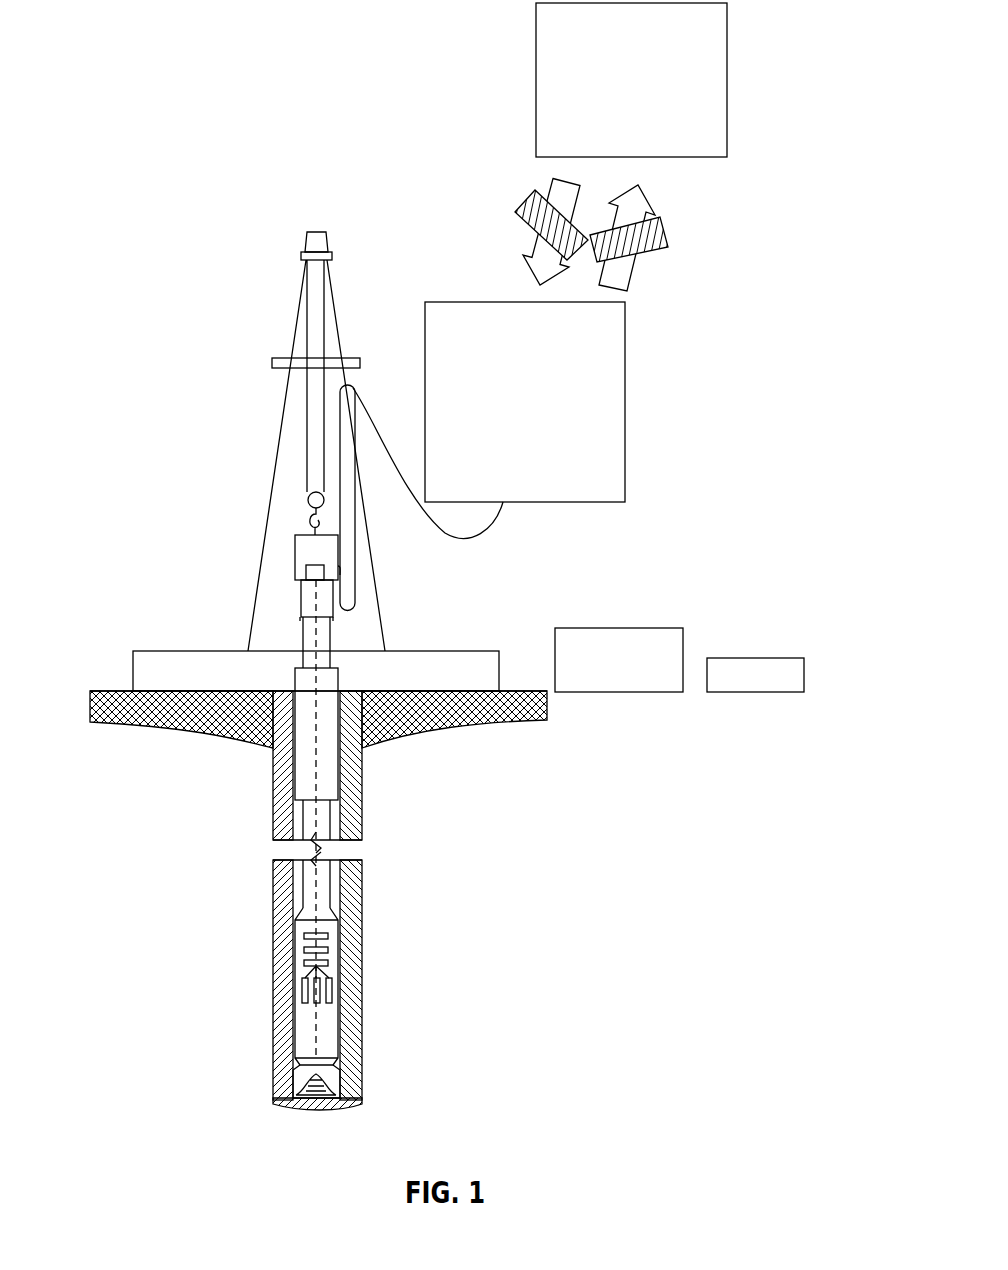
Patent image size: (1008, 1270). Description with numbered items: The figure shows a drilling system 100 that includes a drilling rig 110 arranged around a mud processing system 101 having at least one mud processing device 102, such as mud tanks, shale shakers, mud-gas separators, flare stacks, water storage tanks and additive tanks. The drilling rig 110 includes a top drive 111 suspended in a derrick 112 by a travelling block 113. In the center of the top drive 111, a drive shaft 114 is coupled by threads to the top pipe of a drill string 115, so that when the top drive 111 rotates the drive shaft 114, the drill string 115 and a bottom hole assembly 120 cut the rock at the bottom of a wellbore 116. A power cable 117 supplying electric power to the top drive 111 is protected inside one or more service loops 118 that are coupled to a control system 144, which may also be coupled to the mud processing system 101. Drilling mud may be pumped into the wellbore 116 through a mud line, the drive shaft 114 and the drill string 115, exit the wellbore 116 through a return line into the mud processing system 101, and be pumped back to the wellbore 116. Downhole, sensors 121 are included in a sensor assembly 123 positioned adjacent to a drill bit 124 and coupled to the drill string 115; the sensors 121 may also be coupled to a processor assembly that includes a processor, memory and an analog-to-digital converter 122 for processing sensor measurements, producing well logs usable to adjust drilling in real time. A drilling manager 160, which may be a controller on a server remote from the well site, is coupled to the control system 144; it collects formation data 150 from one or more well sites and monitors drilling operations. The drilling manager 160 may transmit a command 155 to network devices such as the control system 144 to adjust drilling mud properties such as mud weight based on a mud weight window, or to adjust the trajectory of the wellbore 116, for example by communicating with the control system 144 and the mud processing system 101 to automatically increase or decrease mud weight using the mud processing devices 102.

The drilling system 100 is at (234, 219).
The drilling rig 110 is at (118, 233).
The top drive 111 is at (295, 557).
The derrick 112 is at (253, 593).
The travelling block 113 is at (308, 499).
The drive shaft 114 is at (300, 598).
The drill string 115 is at (303, 815).
The wellbore 116 is at (290, 813).
The power cable 117 is at (357, 542).
The service loop 118 is at (480, 532).
The bottom hole assembly 120 is at (203, 903).
The sensors 121 is at (303, 988).
The analog-to-digital converter 122 is at (330, 963).
The sensor assembly 123 is at (295, 940).
The drill bit 124 is at (292, 1086).
The control system 144 is at (547, 345).
The formation data 150 is at (671, 215).
The command 155 is at (515, 198).
The drilling manager 160 is at (654, 45).
The mud processing system 101 is at (820, 598).
The mud processing device 102 is at (615, 692).